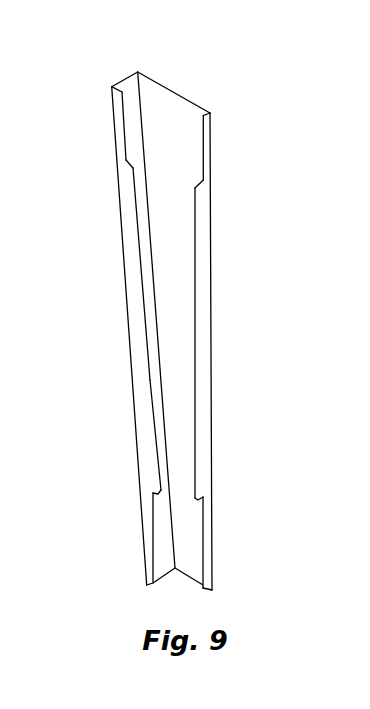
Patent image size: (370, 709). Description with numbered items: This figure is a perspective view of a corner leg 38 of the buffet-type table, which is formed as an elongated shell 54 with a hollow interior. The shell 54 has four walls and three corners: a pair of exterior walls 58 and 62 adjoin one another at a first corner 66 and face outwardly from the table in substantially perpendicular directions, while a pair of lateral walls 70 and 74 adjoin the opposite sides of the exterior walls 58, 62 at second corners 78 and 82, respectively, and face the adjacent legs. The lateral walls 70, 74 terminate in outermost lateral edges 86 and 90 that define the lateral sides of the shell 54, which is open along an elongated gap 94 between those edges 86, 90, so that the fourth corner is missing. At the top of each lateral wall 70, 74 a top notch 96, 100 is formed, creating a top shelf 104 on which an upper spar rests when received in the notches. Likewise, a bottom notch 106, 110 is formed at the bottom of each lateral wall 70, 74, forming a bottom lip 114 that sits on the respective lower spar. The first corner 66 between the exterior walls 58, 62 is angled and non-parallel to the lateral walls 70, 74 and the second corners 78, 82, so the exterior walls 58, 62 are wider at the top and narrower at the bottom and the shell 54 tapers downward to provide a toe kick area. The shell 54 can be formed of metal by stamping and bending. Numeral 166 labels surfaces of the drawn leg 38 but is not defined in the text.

The exterior wall 58 is at (128, 74).
The exterior wall 62 is at (158, 80).
The first corner 66 is at (139, 70).
The second corner 82 is at (213, 114).
The second corner 78 is at (111, 88).
The inner wall surface 166 is at (205, 147).
The top notch 100 is at (210, 170).
The top notch 96 is at (124, 152).
The top shelf 104 is at (130, 166).
The lateral wall 74 is at (203, 225).
The elongated shell 54 is at (198, 258).
The corner leg 38 is at (203, 297).
The lateral wall 70 is at (133, 248).
The outermost lateral edge 86 is at (152, 380).
The outermost lateral edge 90 is at (194, 395).
The elongated gap 94 is at (156, 430).
The bottom lip 114 is at (197, 497).
The bottom notch 106 is at (152, 495).
The bottom notch 110 is at (207, 500).